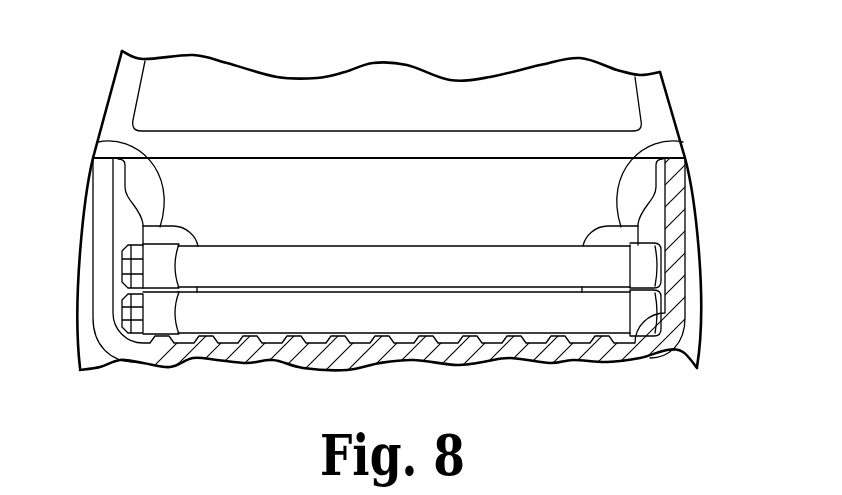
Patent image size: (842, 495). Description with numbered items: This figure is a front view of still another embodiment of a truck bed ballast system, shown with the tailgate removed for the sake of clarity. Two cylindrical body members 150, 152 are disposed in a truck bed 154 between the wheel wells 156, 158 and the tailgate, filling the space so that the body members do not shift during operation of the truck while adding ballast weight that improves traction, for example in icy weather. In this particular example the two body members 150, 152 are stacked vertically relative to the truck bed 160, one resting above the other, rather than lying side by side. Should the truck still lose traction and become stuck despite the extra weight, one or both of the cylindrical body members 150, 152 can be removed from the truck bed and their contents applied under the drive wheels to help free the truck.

The cylindrical body member 150 is at (238, 322).
The cylindrical body member 152 is at (279, 246).
The truck bed 154 is at (512, 186).
The wheel well 156 is at (683, 137).
The wheel well 158 is at (100, 141).
The truck bed 160 is at (433, 357).